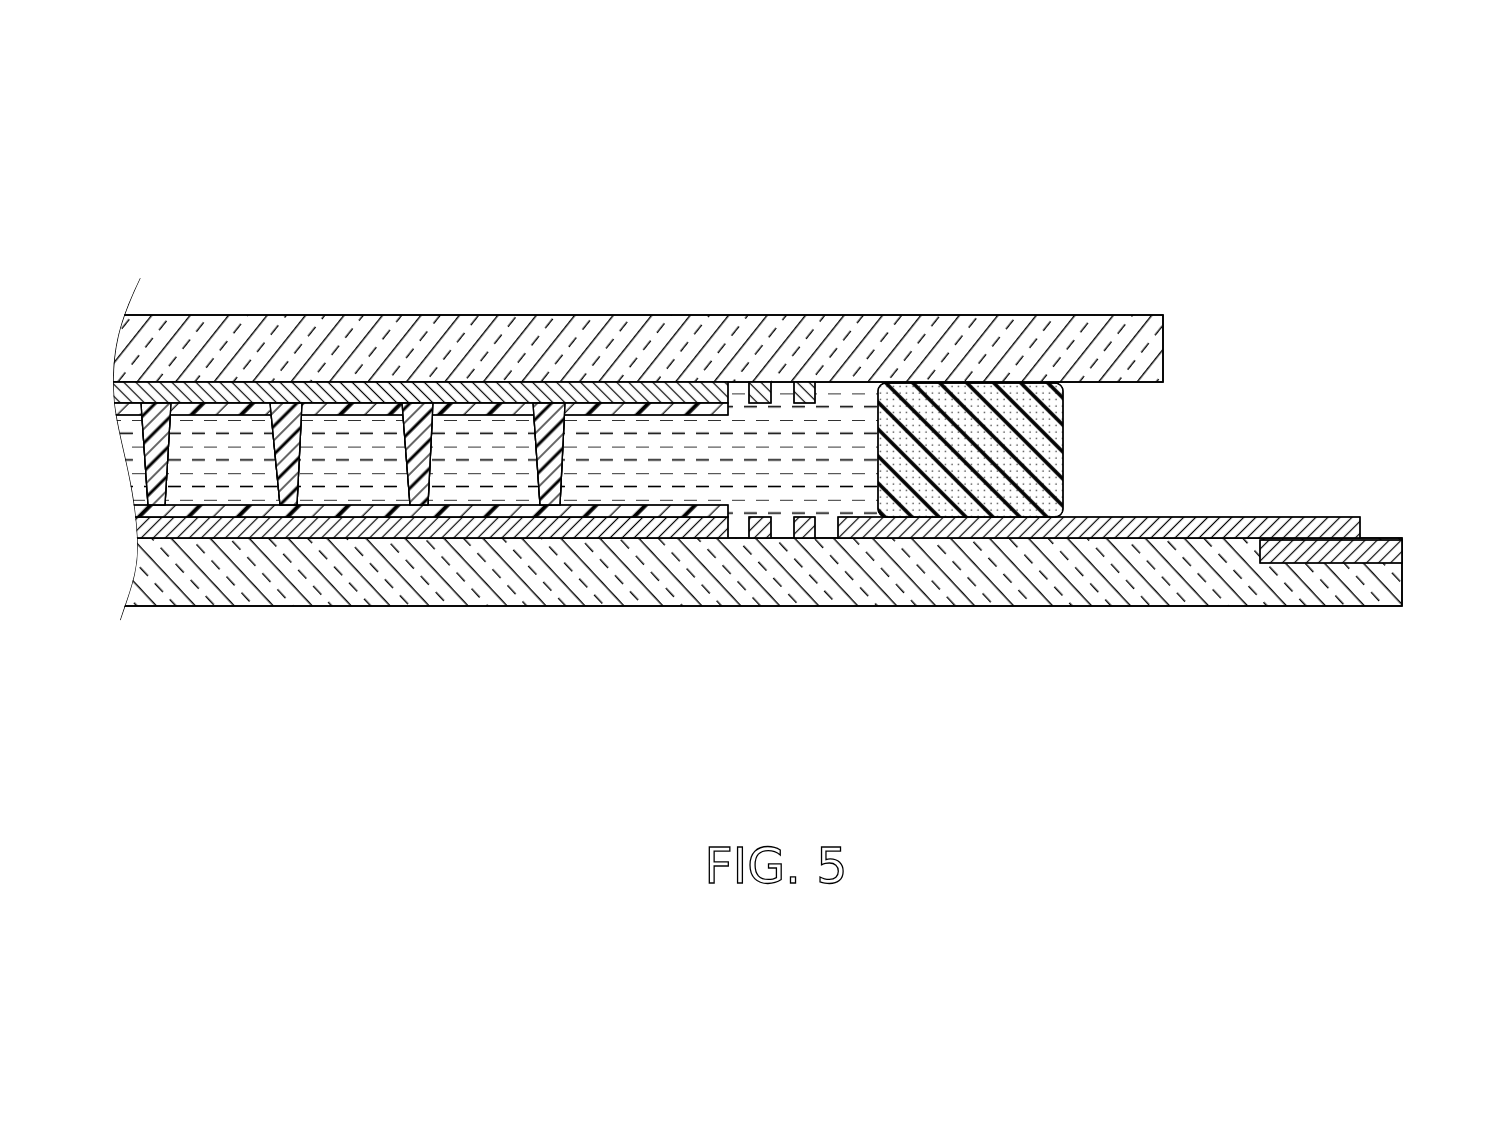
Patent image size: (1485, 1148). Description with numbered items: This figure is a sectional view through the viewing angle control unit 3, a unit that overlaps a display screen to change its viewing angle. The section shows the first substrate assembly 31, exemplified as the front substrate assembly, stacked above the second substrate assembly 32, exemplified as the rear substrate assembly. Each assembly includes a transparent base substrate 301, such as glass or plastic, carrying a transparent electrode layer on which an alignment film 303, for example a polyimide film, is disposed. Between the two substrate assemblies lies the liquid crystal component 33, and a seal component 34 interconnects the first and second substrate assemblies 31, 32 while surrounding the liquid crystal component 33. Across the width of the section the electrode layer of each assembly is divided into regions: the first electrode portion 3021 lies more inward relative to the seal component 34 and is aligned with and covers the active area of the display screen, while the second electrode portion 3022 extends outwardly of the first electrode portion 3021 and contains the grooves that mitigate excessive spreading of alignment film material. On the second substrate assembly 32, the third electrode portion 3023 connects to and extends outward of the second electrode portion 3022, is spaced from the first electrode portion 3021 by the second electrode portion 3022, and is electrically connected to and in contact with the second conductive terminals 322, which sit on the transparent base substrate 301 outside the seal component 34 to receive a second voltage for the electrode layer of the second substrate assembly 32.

The viewing angle control unit 3 is at (780, 422).
The first substrate assembly 31 is at (1129, 295).
The second substrate assembly 32 is at (780, 580).
The transparent base substrate 301 is at (985, 314).
The alignment film 303 is at (602, 407).
The liquid crystal component 33 is at (208, 447).
The seal component 34 is at (1058, 454).
The second conductive terminals 322 is at (1387, 553).
The first electrode portion 3021 is at (728, 201).
The second electrode portion 3022 is at (728, 383).
The third electrode portion 3023 is at (1260, 606).